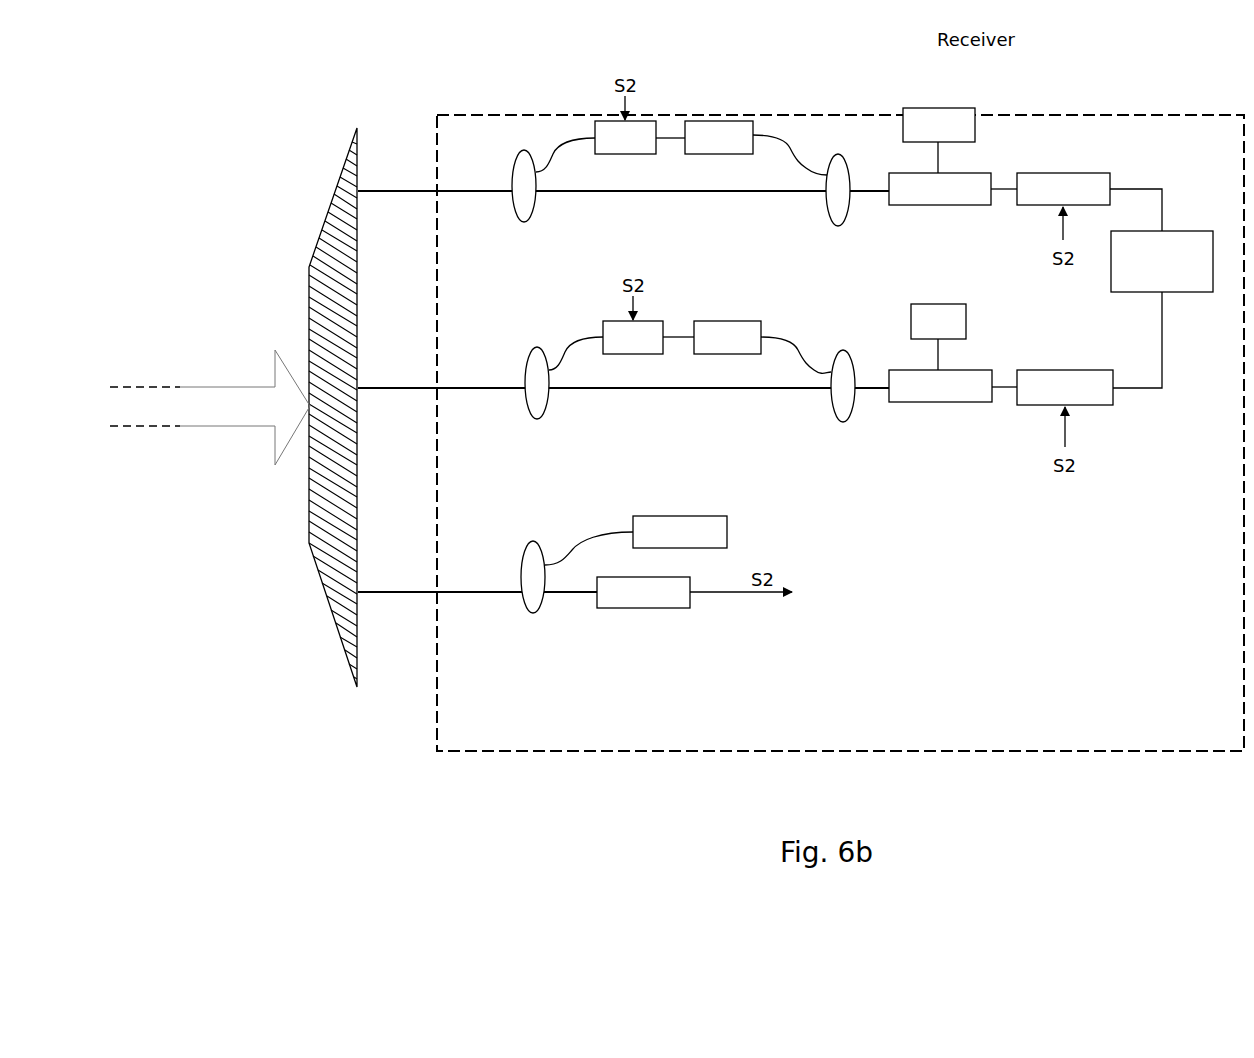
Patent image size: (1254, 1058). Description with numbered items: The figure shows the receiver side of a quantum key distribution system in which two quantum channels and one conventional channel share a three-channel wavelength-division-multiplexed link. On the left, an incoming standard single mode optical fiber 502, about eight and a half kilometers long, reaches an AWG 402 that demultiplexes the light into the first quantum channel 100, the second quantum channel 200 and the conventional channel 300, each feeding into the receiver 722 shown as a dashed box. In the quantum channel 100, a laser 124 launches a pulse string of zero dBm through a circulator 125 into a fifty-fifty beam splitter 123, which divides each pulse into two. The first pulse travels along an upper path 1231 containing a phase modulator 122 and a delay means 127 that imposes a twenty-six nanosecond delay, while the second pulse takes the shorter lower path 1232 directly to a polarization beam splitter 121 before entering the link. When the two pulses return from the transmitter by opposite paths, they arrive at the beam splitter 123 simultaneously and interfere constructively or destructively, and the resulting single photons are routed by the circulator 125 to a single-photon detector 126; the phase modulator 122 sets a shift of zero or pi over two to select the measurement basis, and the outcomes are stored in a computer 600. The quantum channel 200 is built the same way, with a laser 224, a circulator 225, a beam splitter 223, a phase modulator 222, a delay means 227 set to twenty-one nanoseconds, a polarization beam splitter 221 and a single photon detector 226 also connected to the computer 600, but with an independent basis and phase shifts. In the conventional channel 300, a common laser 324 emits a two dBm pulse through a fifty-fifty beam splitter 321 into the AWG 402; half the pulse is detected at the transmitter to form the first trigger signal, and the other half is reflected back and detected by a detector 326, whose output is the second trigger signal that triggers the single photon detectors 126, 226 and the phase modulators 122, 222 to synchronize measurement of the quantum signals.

The quantum channel 100 is at (367, 191).
The quantum channel 200 is at (367, 388).
The conventional channel 300 is at (371, 592).
The AWG 402 is at (337, 220).
The optical fiber 502 is at (192, 427).
The receiver 722 is at (690, 62).
The polarization beam splitter 121 is at (518, 215).
The phase modulator 122 is at (610, 127).
The delay means 127 is at (712, 127).
The upper path 1231 is at (790, 147).
The lower path 1232 is at (712, 192).
The beam splitter 123 is at (838, 222).
The laser 124 is at (962, 113).
The circulator 125 is at (927, 205).
The single-photon detector 126 is at (1052, 180).
The computer 600 is at (1195, 232).
The polarization beam splitter 221 is at (526, 410).
The phase modulator 222 is at (612, 325).
The delay means 227 is at (742, 323).
The beam splitter 223 is at (848, 413).
The laser 224 is at (954, 312).
The circulator 225 is at (932, 395).
The single photon detector 226 is at (1074, 370).
The beam splitter 321 is at (525, 610).
The common laser 324 is at (677, 518).
The detector 326 is at (660, 607).